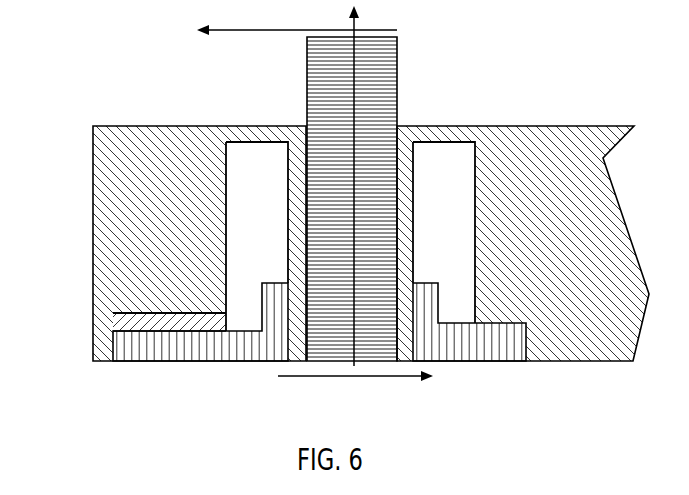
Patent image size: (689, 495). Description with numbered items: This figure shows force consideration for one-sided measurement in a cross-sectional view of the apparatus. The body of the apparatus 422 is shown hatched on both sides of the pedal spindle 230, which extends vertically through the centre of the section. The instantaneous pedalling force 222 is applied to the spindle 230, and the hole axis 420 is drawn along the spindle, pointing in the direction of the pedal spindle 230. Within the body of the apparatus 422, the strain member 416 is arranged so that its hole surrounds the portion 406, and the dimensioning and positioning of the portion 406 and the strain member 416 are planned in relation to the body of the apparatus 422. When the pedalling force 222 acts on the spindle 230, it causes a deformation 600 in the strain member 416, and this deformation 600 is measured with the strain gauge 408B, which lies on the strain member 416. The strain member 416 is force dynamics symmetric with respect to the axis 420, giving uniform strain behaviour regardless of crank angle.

The instantaneous pedalling force 222 is at (257, 32).
The pedal spindle 230 is at (397, 87).
The portion 406 is at (288, 195).
The strain gauge 408B is at (118, 320).
The strain member 416 is at (203, 357).
The axis of the hole 420 is at (355, 21).
The body of the apparatus 422 is at (178, 135).
The deformation 600 is at (352, 378).